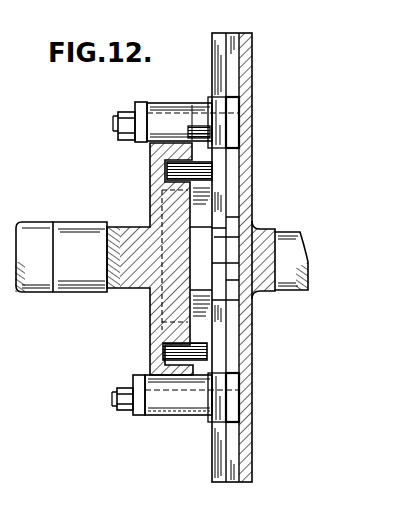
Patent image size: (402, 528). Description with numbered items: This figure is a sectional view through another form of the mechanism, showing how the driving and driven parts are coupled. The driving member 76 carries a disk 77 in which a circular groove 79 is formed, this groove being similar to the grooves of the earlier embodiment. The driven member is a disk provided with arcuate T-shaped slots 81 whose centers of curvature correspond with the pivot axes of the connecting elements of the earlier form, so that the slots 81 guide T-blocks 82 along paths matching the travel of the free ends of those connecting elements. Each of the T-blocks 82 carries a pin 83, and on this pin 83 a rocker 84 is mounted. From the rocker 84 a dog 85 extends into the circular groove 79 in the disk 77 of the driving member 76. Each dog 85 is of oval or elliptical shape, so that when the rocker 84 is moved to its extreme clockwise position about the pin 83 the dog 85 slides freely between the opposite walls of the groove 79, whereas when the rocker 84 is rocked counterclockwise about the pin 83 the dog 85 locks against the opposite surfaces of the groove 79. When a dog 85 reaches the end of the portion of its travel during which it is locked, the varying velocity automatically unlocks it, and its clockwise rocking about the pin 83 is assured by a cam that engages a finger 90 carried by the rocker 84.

The driving member 76 is at (88, 240).
The disk 77 is at (148, 155).
The groove 79 is at (177, 133).
The slots 81 is at (232, 52).
The T-blocks 82 is at (240, 114).
The pin 83 is at (119, 120).
The rocker 84 is at (181, 102).
The dog 85 is at (180, 168).
The finger 90 is at (138, 372).